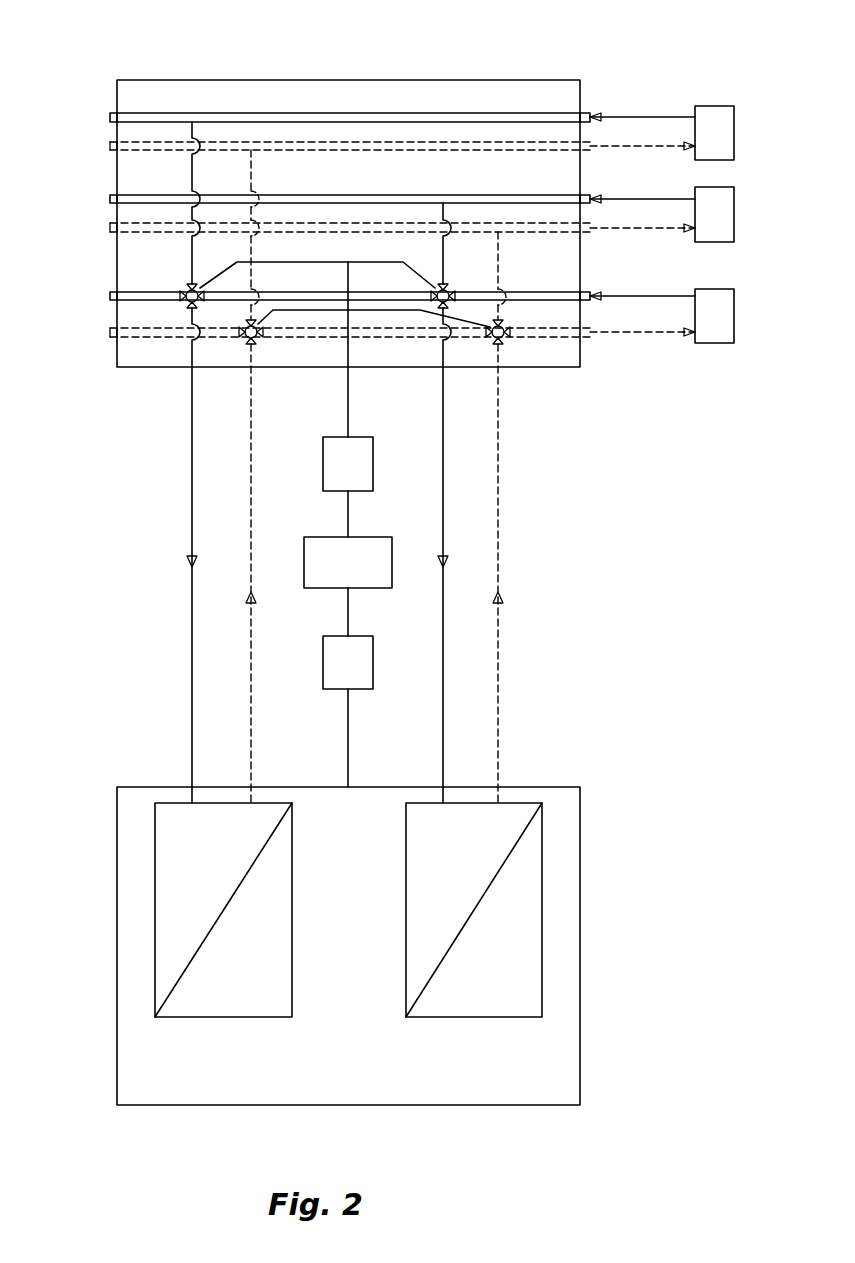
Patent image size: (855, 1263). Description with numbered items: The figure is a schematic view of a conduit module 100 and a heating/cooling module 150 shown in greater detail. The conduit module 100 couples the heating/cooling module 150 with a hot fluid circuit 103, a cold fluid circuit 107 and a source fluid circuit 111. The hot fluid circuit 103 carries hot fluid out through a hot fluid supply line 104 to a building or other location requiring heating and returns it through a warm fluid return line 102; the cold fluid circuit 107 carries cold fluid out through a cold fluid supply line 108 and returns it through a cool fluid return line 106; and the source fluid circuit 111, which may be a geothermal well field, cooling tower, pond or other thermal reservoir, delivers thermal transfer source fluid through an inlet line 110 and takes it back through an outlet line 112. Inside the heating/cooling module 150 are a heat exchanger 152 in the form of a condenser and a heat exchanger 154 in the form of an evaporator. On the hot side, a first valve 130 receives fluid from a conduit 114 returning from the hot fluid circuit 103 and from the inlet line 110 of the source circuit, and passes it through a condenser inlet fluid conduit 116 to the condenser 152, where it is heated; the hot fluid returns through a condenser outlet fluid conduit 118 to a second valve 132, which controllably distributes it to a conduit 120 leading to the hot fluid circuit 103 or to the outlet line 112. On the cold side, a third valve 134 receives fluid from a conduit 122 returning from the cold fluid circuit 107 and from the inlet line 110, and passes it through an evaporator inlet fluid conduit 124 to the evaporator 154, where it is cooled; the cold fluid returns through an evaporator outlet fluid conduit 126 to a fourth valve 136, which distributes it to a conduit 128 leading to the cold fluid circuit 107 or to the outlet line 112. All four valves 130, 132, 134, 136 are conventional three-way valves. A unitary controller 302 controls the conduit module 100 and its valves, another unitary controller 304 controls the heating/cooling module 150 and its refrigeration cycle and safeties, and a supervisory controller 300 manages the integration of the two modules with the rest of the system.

The conduit module 100 is at (150, 80).
The warm fluid return line 102 is at (310, 112).
The hot fluid circuit 103 is at (734, 133).
The hot fluid supply line 104 is at (590, 148).
The cool fluid return line 106 is at (135, 209).
The cold fluid circuit 107 is at (734, 207).
The cold fluid supply line 108 is at (590, 229).
The inlet line 110 is at (140, 291).
The source fluid circuit 111 is at (734, 320).
The outlet line 112 is at (590, 332).
The conduit 114 is at (192, 176).
The condenser inlet fluid conduit 116 is at (192, 500).
The condenser outlet fluid conduit 118 is at (251, 532).
The conduit 120 is at (252, 183).
The conduit 122 is at (447, 212).
The evaporator inlet fluid conduit 124 is at (443, 522).
The evaporator outlet fluid conduit 126 is at (498, 485).
The conduit 128 is at (500, 252).
The first valve 130 is at (184, 311).
The second valve 132 is at (244, 345).
The third valve 134 is at (454, 310).
The fourth valve 136 is at (512, 346).
The heating/cooling module 150 is at (580, 1035).
The heat exchanger 152 is at (155, 913).
The heat exchanger 154 is at (542, 915).
The supervisory controller 300 is at (393, 548).
The unitary controller 302 is at (376, 467).
The unitary controller 304 is at (376, 663).